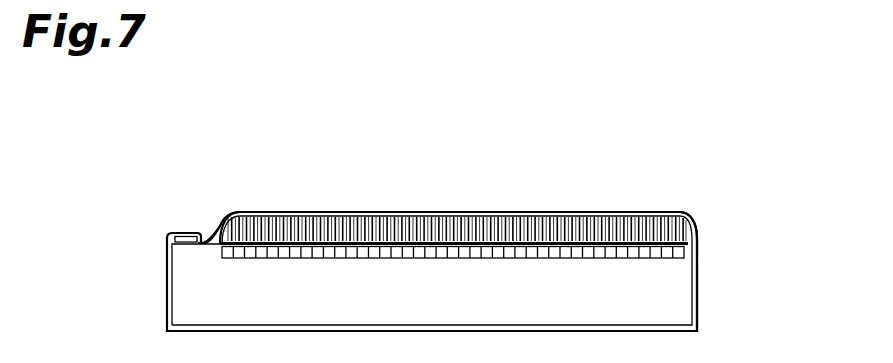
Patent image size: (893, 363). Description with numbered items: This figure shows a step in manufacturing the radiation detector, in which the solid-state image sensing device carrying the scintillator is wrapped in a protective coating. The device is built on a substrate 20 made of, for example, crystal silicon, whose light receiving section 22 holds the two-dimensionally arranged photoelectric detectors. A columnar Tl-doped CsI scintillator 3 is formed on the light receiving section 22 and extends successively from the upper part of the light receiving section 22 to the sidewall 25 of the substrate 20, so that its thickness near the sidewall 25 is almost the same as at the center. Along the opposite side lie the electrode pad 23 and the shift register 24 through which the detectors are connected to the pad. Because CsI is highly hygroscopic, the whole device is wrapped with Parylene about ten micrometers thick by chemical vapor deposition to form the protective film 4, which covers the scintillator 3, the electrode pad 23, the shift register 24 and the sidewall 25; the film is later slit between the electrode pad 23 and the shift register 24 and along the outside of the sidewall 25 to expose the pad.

The scintillator 3 is at (548, 220).
The protective film 4 is at (686, 215).
The substrate 20 is at (187, 282).
The light receiving section 22 is at (430, 247).
The electrode pad 23 is at (182, 237).
The shift register 24 is at (203, 242).
The sidewall 25 is at (697, 295).